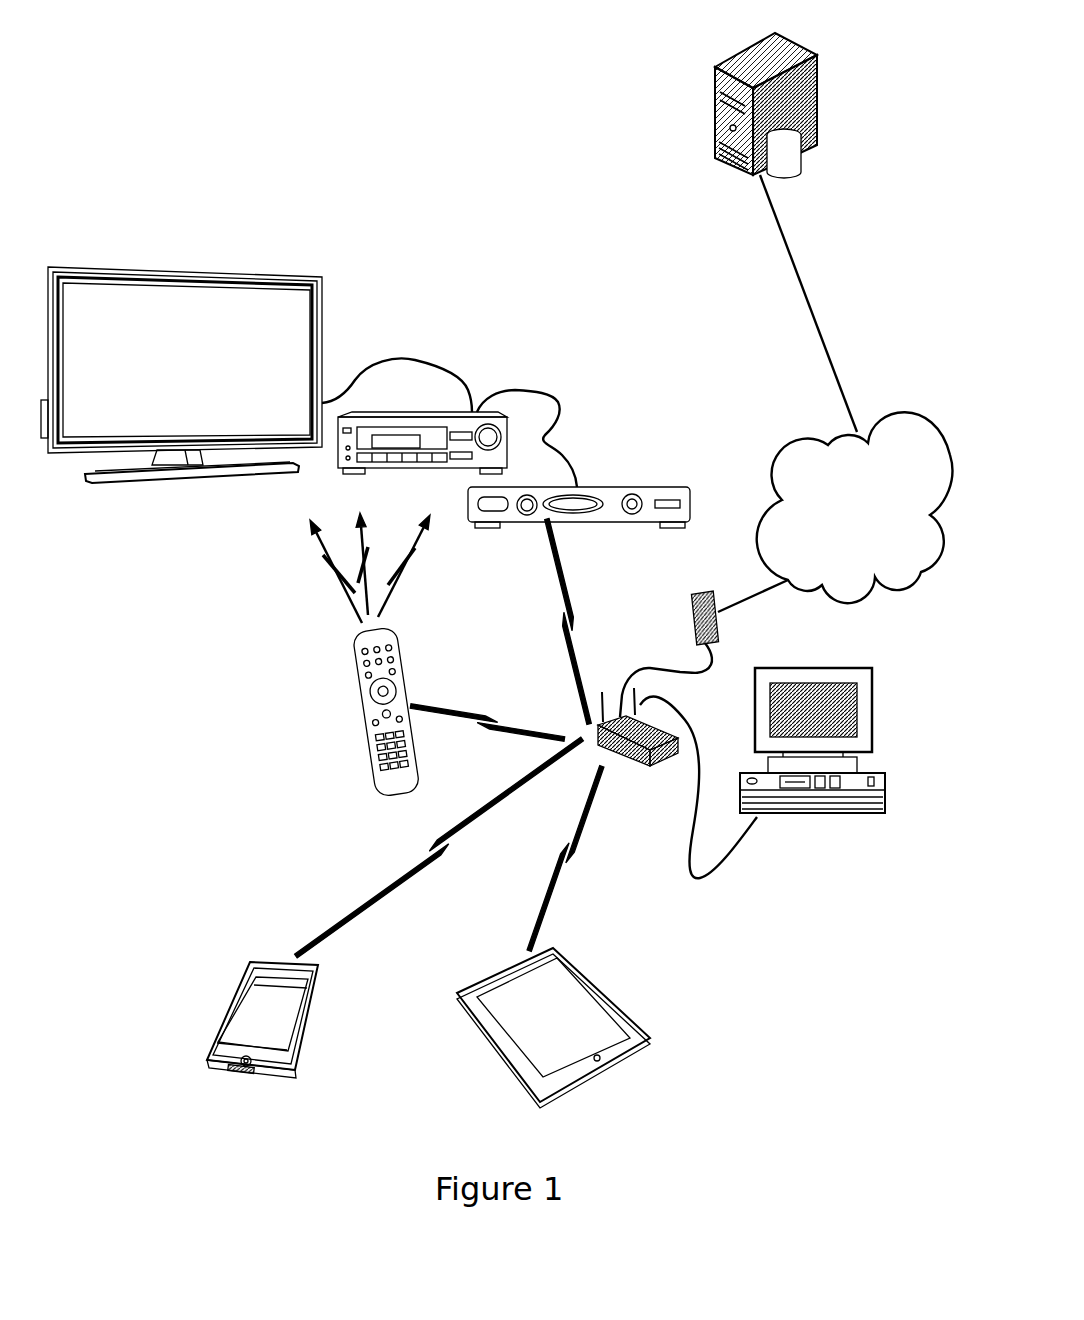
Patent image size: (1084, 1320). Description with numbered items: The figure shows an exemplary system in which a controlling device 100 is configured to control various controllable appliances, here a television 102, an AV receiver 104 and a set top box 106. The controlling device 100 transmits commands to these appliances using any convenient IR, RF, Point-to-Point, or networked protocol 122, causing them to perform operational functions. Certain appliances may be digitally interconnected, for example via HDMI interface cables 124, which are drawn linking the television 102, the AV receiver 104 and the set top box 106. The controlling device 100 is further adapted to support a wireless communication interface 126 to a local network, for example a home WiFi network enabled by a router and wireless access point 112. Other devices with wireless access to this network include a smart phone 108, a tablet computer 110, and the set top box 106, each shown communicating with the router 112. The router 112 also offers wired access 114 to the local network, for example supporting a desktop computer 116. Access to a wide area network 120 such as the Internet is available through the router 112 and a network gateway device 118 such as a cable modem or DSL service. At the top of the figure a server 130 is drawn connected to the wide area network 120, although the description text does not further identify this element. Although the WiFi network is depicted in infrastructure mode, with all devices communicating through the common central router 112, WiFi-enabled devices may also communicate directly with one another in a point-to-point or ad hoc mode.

The controlling device 100 is at (362, 718).
The television 102 is at (245, 272).
The AV receiver 104 is at (453, 468).
The set top box 106 is at (592, 485).
The smart phone 108 is at (308, 1032).
The tablet computer 110 is at (473, 1028).
The router and wireless access point 112 is at (643, 767).
The wired access 114 is at (723, 867).
The desktop computer 116 is at (850, 816).
The network gateway device 118 is at (695, 593).
The wide area network 120 is at (895, 408).
The protocol 122 is at (296, 598).
The HDMI interface cables 124 is at (533, 388).
The wireless communication interface 126 is at (433, 708).
The server 130 is at (825, 90).